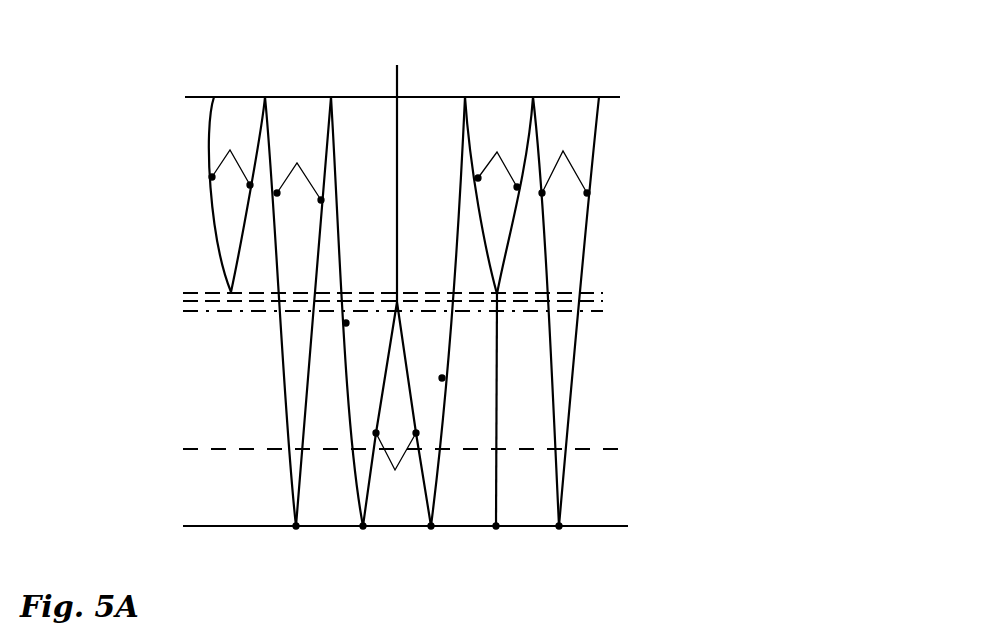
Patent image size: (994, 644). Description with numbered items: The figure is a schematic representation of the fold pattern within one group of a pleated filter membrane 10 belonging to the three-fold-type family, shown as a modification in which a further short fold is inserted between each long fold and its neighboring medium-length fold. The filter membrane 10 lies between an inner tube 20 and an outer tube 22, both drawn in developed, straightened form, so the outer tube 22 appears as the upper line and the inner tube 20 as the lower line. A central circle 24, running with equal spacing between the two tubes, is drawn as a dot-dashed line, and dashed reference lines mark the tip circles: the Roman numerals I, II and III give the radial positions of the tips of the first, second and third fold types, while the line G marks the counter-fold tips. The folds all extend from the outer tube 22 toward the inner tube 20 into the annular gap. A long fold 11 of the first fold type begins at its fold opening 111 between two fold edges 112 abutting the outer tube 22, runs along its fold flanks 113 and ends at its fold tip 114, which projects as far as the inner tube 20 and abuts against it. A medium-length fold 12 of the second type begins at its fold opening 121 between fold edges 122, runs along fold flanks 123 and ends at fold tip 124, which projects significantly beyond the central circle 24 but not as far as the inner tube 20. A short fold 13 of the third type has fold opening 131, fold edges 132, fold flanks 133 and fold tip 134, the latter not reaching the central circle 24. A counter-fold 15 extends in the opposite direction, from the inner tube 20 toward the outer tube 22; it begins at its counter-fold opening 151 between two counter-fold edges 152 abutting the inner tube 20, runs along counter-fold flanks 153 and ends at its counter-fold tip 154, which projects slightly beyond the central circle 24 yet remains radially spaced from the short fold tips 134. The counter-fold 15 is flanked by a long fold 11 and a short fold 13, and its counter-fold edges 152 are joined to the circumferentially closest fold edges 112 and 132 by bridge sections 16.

The filter membrane 10 is at (279, 265).
The fold of a first fold type 11 is at (294, 213).
The fold of a second fold type 12 is at (565, 172).
The fold of a third fold type 13 is at (497, 197).
The counter-fold 15 is at (396, 380).
The bridge section 16 is at (346, 323).
The inner tube 20 is at (232, 526).
The outer tube 22 is at (214, 97).
The central circle 24 is at (453, 322).
The fold opening 111 is at (297, 103).
The fold edge 112 is at (265, 97).
The fold flank 113 is at (299, 172).
The fold tip 114 is at (296, 526).
The fold opening 121 is at (570, 105).
The fold edge 122 is at (599, 97).
The fold flank 123 is at (564, 162).
The fold tip 124 is at (559, 526).
The fold opening 131 is at (225, 104).
The fold edge 132 is at (465, 97).
The fold flank 133 is at (371, 195).
The fold tip 134 is at (496, 526).
The counter-fold opening 151 is at (392, 520).
The counter-fold edge 152 is at (363, 526).
The counter-fold flank 153 is at (397, 414).
The counter-fold tip 154 is at (392, 172).
The reference line of the counter-fold tip circle G is at (643, 302).
The reference line of the first fold type tip circle I is at (628, 526).
The reference line of the second fold type tip circle II is at (635, 449).
The reference line of the third fold type tip circle III is at (617, 293).